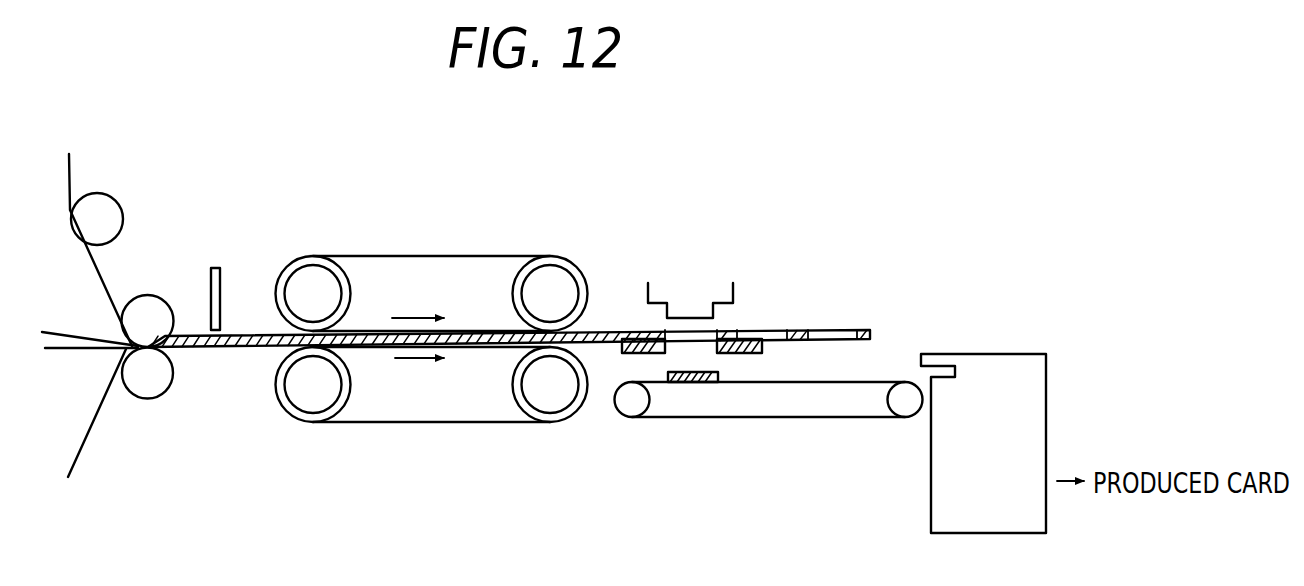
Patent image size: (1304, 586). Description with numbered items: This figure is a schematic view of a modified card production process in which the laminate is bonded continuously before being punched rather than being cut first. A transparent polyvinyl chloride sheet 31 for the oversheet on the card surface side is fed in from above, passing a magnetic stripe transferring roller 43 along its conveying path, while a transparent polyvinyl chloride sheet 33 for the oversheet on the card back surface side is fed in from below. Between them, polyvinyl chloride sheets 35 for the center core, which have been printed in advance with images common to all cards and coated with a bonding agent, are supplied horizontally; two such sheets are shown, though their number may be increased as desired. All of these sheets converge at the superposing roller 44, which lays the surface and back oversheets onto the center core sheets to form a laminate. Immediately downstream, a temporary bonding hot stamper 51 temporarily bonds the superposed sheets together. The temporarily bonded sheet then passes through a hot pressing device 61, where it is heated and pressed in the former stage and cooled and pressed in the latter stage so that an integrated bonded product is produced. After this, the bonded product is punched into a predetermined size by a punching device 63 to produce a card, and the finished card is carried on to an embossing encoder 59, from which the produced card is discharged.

The transparent polyvinyl chloride sheet 31 is at (85, 259).
The transparent polyvinyl chloride sheet 33 is at (85, 440).
The polyvinyl chloride sheet for center core 35 is at (60, 333).
The magnetic stripe transferring roller 43 is at (101, 198).
The superposing roller 44 is at (147, 294).
The temporary bonding hot stamper 51 is at (218, 268).
The embossing encoder 59 is at (931, 497).
The hot pressing device 61 is at (456, 254).
The punching device 63 is at (701, 263).